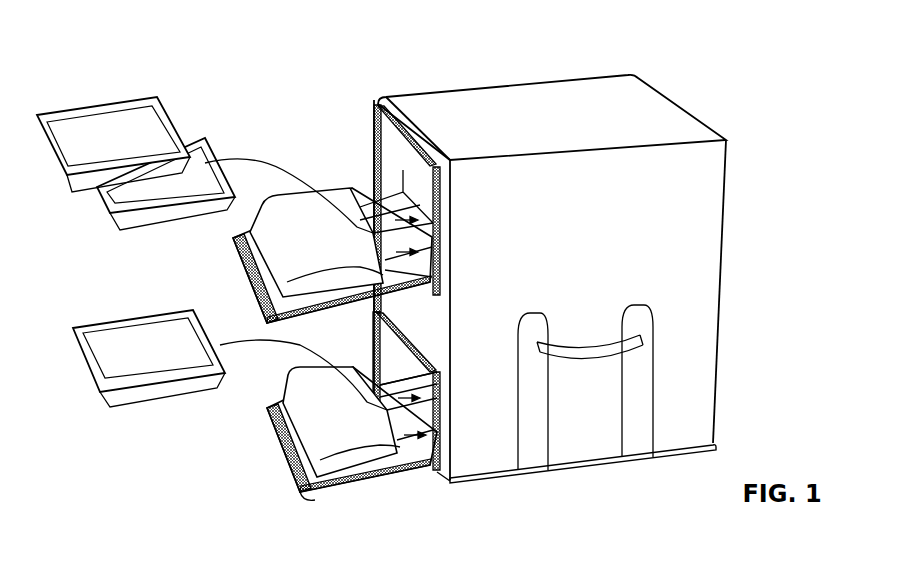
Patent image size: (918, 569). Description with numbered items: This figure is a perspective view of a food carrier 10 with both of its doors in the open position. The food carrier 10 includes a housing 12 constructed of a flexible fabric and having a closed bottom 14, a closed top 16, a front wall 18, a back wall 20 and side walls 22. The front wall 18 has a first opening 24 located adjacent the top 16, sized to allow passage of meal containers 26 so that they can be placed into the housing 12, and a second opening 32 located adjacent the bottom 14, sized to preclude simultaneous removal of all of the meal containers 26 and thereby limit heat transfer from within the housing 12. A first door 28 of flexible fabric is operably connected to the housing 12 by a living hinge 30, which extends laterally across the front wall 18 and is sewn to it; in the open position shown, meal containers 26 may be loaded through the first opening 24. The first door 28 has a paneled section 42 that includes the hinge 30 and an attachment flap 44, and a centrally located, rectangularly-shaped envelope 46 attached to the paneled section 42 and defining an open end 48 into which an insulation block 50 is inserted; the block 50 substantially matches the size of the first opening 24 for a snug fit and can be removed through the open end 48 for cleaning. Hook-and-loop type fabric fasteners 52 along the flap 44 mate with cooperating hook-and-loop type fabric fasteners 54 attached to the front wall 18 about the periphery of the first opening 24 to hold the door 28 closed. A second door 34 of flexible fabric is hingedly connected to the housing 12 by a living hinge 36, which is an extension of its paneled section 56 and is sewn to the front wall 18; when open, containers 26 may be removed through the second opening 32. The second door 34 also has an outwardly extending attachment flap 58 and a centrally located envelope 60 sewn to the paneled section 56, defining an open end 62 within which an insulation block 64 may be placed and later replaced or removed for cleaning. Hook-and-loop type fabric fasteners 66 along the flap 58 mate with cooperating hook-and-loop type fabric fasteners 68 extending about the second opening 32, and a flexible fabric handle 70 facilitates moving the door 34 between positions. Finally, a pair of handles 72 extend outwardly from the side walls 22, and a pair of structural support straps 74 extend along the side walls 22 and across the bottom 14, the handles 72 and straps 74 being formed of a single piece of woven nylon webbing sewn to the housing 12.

The food carrier 10 is at (552, 274).
The housing 12 is at (544, 275).
The bottom 14 is at (484, 478).
The top 16 is at (460, 92).
The front wall 18 is at (440, 352).
The back wall 20 is at (720, 362).
The side walls 22 is at (707, 303).
The first opening 24 is at (408, 178).
The meal containers 26 is at (183, 142).
The first door 28 is at (338, 219).
The living hinge 30 is at (306, 255).
The second opening 32 is at (323, 450).
The second door 34 is at (323, 451).
The living hinge 36 is at (240, 252).
The paneled section 42 is at (393, 303).
The attachment flap 44 is at (252, 290).
The envelope 46 is at (288, 207).
The open end 48 is at (392, 257).
The insulation block 50 is at (385, 277).
The hook-and-loop type fabric fasteners 52 is at (232, 242).
The cooperating hook-and-loop type fabric fasteners 54 is at (380, 98).
The paneled section 56 is at (383, 478).
The attachment flap 58 is at (283, 442).
The envelope 60 is at (300, 483).
The open end 62 is at (440, 425).
The insulation block 64 is at (440, 443).
The hook-and-loop type fabric fasteners 66 is at (267, 413).
The cooperating hook-and-loop type fabric fasteners 68 is at (373, 342).
The flexible fabric handle 70 is at (320, 503).
The handles 72 is at (592, 357).
The structural support straps 74 is at (653, 447).